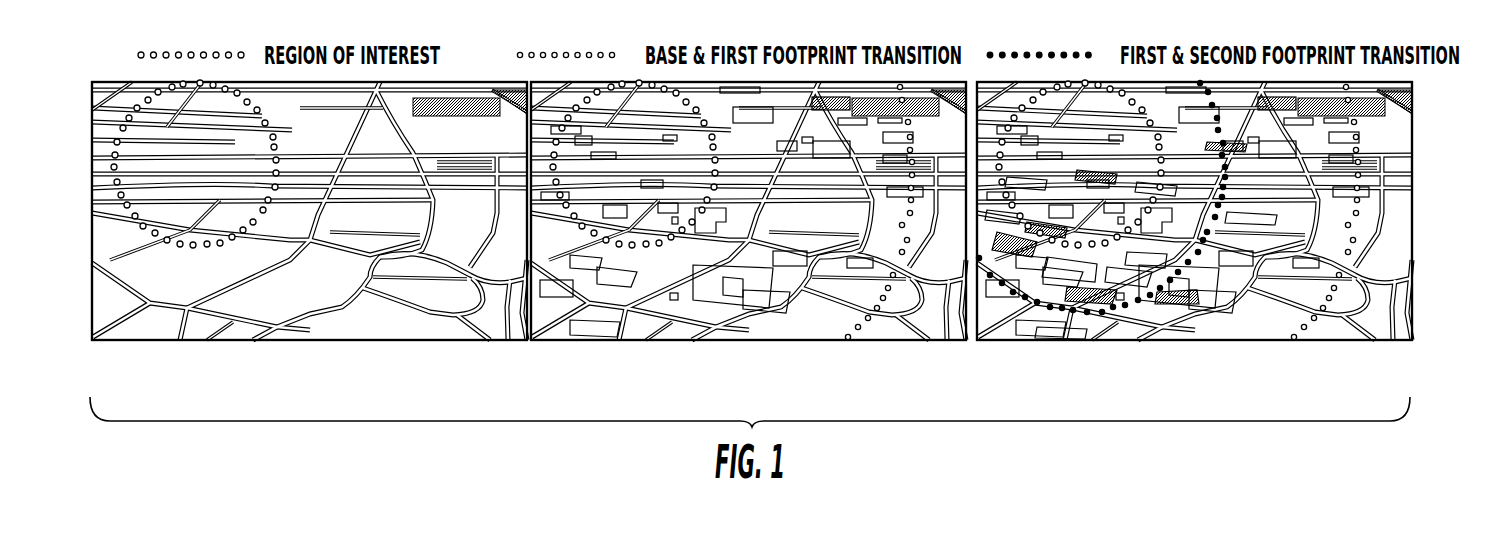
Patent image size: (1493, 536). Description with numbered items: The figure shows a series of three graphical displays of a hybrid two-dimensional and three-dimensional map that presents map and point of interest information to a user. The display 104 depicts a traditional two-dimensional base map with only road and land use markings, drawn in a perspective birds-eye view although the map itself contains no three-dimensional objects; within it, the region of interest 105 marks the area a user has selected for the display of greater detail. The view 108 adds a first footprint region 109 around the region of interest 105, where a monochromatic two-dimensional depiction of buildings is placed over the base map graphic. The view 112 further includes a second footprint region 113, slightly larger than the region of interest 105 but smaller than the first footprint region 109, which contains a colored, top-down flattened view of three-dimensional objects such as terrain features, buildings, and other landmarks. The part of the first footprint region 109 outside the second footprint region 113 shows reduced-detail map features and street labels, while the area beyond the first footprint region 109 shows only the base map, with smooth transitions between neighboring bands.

The display 104 is at (462, 341).
The region of interest 105 is at (278, 147).
The view 108 is at (900, 341).
The first footprint region 109 is at (890, 276).
The view 112 is at (1355, 341).
The second footprint region 113 is at (1218, 217).